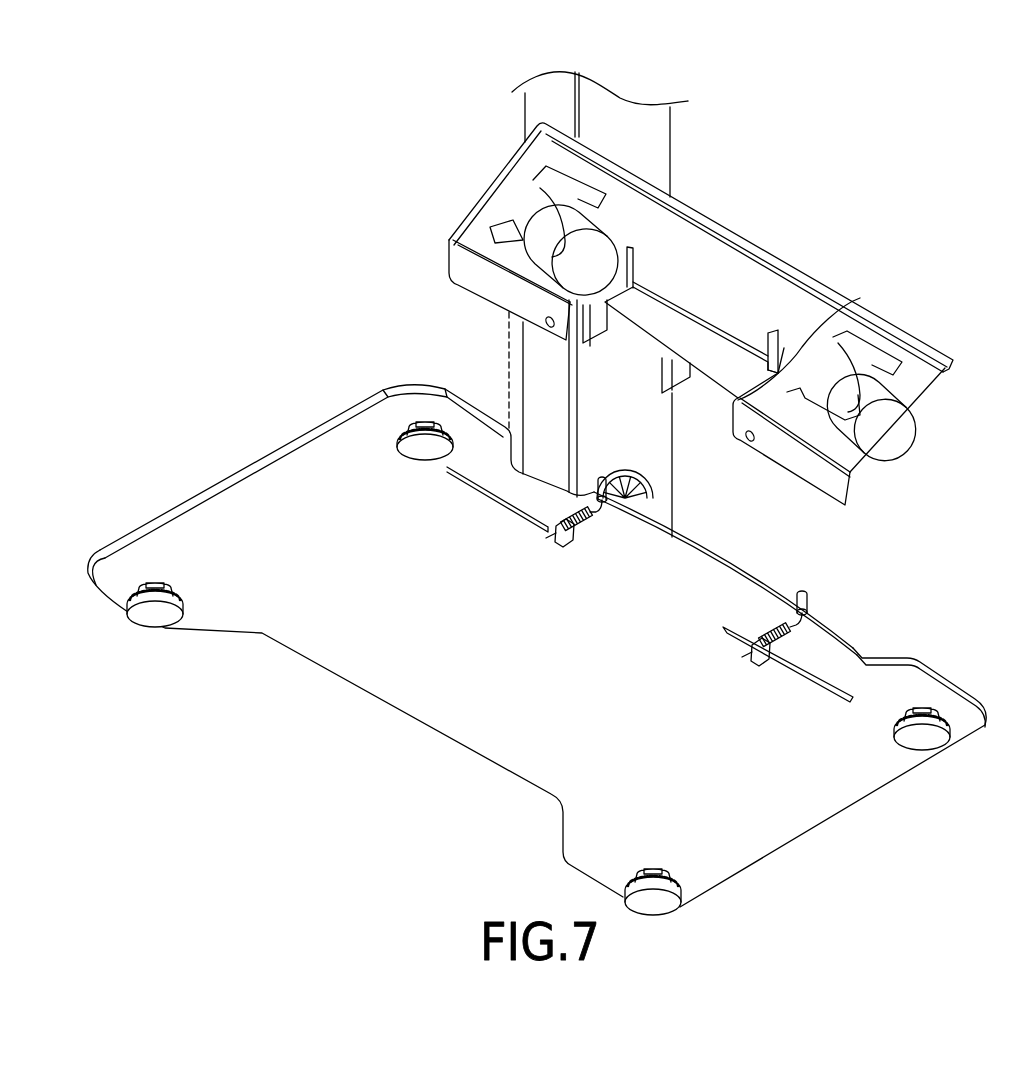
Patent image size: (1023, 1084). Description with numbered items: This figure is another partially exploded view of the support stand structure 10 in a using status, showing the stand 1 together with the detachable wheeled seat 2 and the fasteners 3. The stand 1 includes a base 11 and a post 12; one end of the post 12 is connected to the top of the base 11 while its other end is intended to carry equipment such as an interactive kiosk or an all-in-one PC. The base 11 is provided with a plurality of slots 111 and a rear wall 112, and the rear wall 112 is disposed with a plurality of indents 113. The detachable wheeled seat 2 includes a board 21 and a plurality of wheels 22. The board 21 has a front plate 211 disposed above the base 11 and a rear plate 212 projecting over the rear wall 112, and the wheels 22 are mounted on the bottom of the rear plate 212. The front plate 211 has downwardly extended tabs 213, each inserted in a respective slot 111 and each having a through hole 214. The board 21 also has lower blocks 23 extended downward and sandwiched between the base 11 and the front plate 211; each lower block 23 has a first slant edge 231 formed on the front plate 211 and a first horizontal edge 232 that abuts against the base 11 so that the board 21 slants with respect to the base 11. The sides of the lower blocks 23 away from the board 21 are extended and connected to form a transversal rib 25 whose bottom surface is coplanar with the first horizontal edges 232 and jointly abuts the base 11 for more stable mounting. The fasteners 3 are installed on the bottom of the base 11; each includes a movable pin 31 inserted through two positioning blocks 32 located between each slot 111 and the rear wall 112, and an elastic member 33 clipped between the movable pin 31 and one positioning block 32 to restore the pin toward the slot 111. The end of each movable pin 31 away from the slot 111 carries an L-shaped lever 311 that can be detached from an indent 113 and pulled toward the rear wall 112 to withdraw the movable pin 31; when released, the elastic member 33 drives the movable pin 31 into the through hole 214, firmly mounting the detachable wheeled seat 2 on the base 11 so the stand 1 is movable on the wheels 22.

The support stand structure 10 is at (384, 68).
The stand 1 is at (638, 301).
The post 12 is at (657, 138).
The base 11 is at (537, 650).
The slot 111 is at (800, 682).
The rear wall 112 is at (722, 556).
The indent 113 is at (808, 600).
The detachable wheeled seat 2 is at (662, 327).
The board 21 is at (647, 331).
The front plate 211 is at (760, 400).
The rear plate 212 is at (780, 297).
The tab 213 is at (462, 260).
The through hole 214 is at (552, 328).
The wheel 22 is at (625, 235).
The lower block 23 is at (751, 325).
The first slant edge 231 is at (769, 330).
The first horizontal edge 232 is at (784, 348).
The transversal rib 25 is at (653, 333).
The fastener 3 is at (719, 620).
The movable pin 31 is at (716, 561).
The L-shaped lever 311 is at (806, 590).
The positioning block 32 is at (800, 634).
The elastic member 33 is at (775, 662).